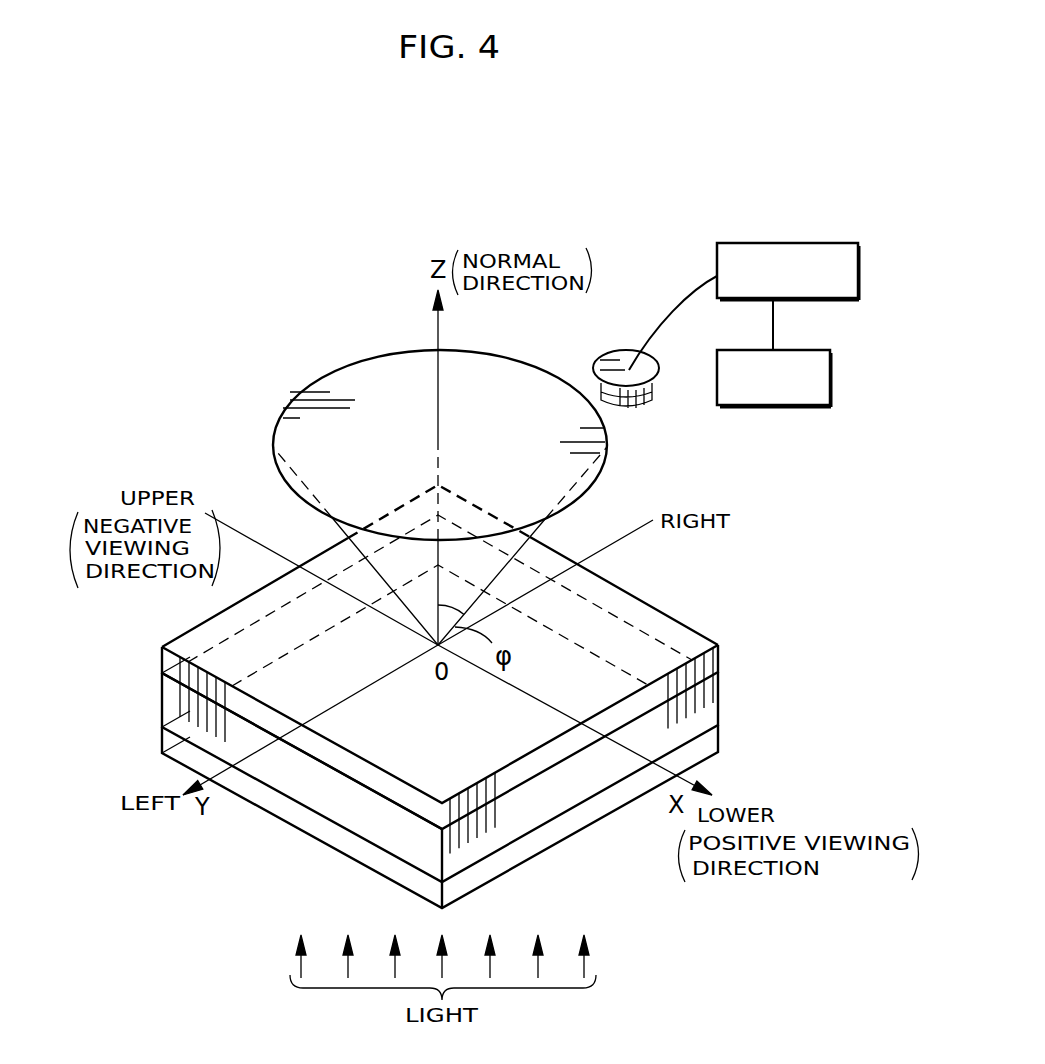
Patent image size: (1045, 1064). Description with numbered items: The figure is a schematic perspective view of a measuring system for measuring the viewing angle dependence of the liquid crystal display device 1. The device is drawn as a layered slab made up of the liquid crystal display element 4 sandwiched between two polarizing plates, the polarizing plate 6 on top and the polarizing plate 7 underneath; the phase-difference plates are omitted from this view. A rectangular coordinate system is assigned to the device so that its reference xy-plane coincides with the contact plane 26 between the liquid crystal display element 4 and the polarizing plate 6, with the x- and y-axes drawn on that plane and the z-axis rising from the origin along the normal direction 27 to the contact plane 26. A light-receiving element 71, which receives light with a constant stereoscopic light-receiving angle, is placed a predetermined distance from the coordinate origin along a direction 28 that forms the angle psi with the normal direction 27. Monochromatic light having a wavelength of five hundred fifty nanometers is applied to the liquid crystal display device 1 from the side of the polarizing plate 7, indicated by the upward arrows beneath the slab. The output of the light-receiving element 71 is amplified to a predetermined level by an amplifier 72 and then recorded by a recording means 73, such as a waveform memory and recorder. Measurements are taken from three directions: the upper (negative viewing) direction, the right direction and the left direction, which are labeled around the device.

The liquid crystal display device 1 is at (446, 696).
The liquid crystal display element 4 is at (722, 695).
The polarizing plate 6 is at (722, 653).
The polarizing plate 7 is at (722, 735).
The contact plane 26 is at (347, 777).
The normal direction 27 is at (433, 322).
The direction 28 is at (527, 553).
The light-receiving element 71 is at (622, 352).
The amplifier 72 is at (745, 243).
The recording means 73 is at (802, 405).